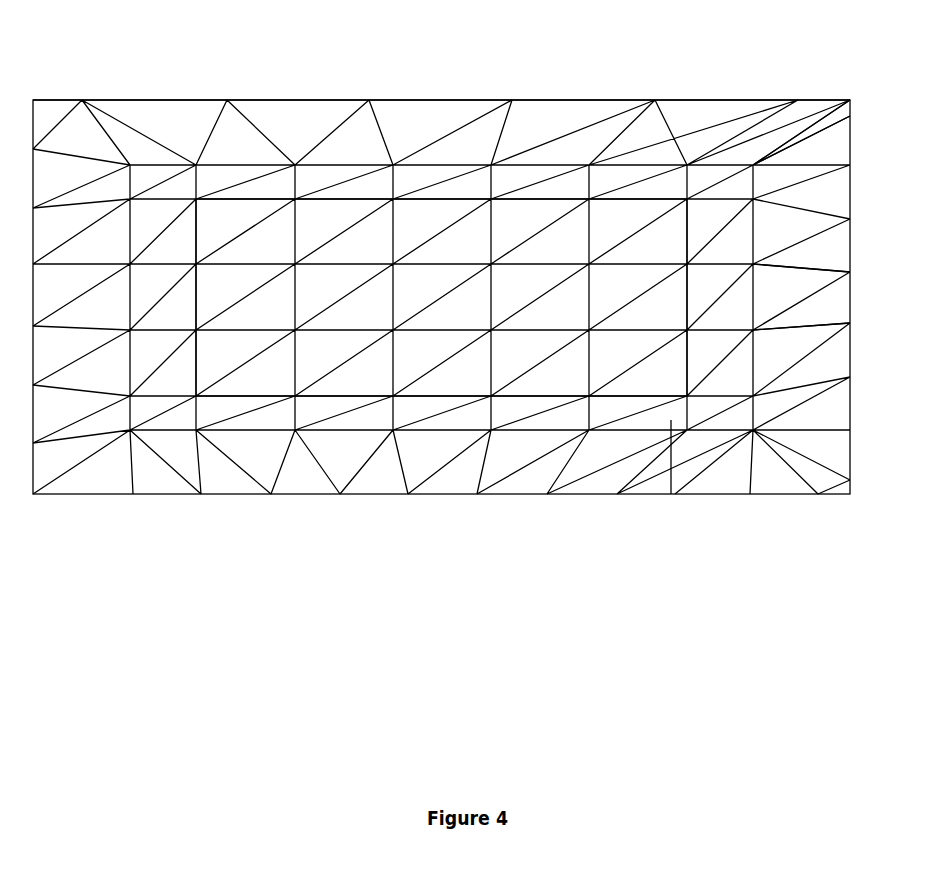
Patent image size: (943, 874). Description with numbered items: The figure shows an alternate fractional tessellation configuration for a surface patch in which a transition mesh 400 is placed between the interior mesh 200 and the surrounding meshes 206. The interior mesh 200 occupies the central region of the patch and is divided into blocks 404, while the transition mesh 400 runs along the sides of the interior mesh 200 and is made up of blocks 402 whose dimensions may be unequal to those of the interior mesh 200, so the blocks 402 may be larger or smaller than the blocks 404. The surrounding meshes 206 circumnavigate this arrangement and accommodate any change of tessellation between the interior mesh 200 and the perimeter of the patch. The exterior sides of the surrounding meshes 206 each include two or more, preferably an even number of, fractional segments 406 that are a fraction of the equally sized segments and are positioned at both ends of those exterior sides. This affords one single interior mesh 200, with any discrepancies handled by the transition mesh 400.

The interior mesh 200 is at (296, 338).
The surrounding meshes 206 is at (706, 99).
The transition mesh 400 is at (738, 307).
The blocks of the transition mesh 402 is at (640, 430).
The blocks defined by the interior mesh 404 is at (471, 378).
The fractional segments 406 is at (815, 99).